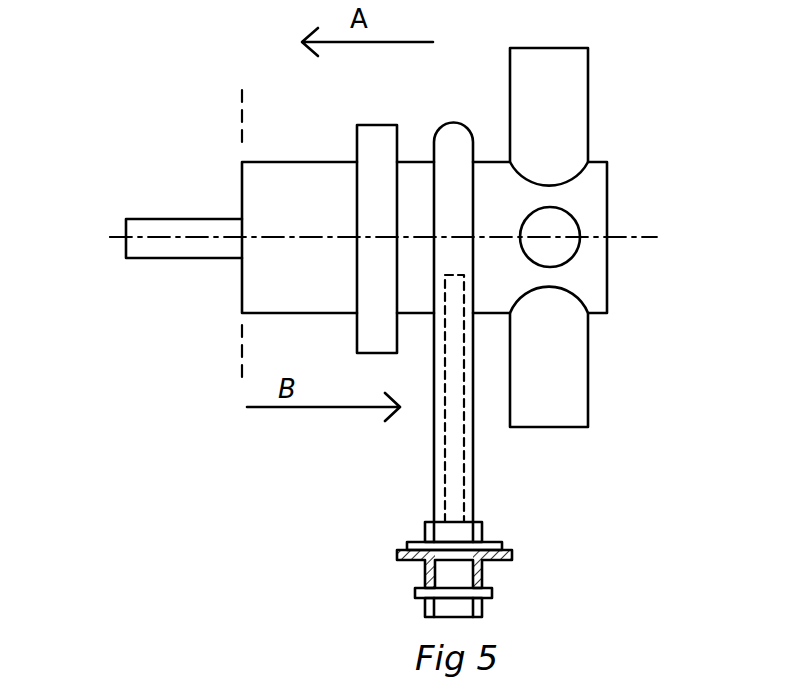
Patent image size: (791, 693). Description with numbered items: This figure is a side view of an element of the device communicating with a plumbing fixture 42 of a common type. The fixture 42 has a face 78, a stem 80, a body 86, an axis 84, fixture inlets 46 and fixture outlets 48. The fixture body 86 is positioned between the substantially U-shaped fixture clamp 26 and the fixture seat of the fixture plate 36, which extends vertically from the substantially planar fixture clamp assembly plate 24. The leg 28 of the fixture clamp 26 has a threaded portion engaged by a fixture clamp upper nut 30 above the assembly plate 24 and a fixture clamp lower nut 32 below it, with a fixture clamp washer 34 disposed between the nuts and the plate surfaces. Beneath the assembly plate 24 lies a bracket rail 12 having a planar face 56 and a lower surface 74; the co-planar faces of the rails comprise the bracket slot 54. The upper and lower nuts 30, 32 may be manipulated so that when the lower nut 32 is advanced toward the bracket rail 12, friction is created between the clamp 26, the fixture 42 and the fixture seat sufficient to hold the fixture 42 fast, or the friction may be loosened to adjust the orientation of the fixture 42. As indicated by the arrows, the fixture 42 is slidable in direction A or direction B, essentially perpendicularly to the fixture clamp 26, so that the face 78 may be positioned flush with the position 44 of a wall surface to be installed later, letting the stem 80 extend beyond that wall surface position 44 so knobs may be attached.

The bracket rail 12 is at (512, 558).
The fixture clamp assembly plate 24 is at (424, 540).
The fixture clamp 26 is at (473, 177).
The fixture clamp leg 28 is at (477, 490).
The fixture clamp upper nut 30 is at (485, 527).
The fixture clamp lower nut 32 is at (425, 612).
The fixture clamp washer 34 is at (415, 593).
The fixture plate 36 is at (465, 453).
The plumbing fixture 42 is at (318, 162).
The wall surface position 44 is at (242, 120).
The fixture inlet 46 is at (565, 226).
The fixture outlet 48 is at (572, 112).
The bracket slot 54 is at (467, 575).
The planar face 56 is at (402, 551).
The lower surface 74 is at (488, 597).
The face 78 is at (238, 181).
The stem 80 is at (148, 260).
The axis 84 is at (110, 237).
The body 86 is at (486, 162).